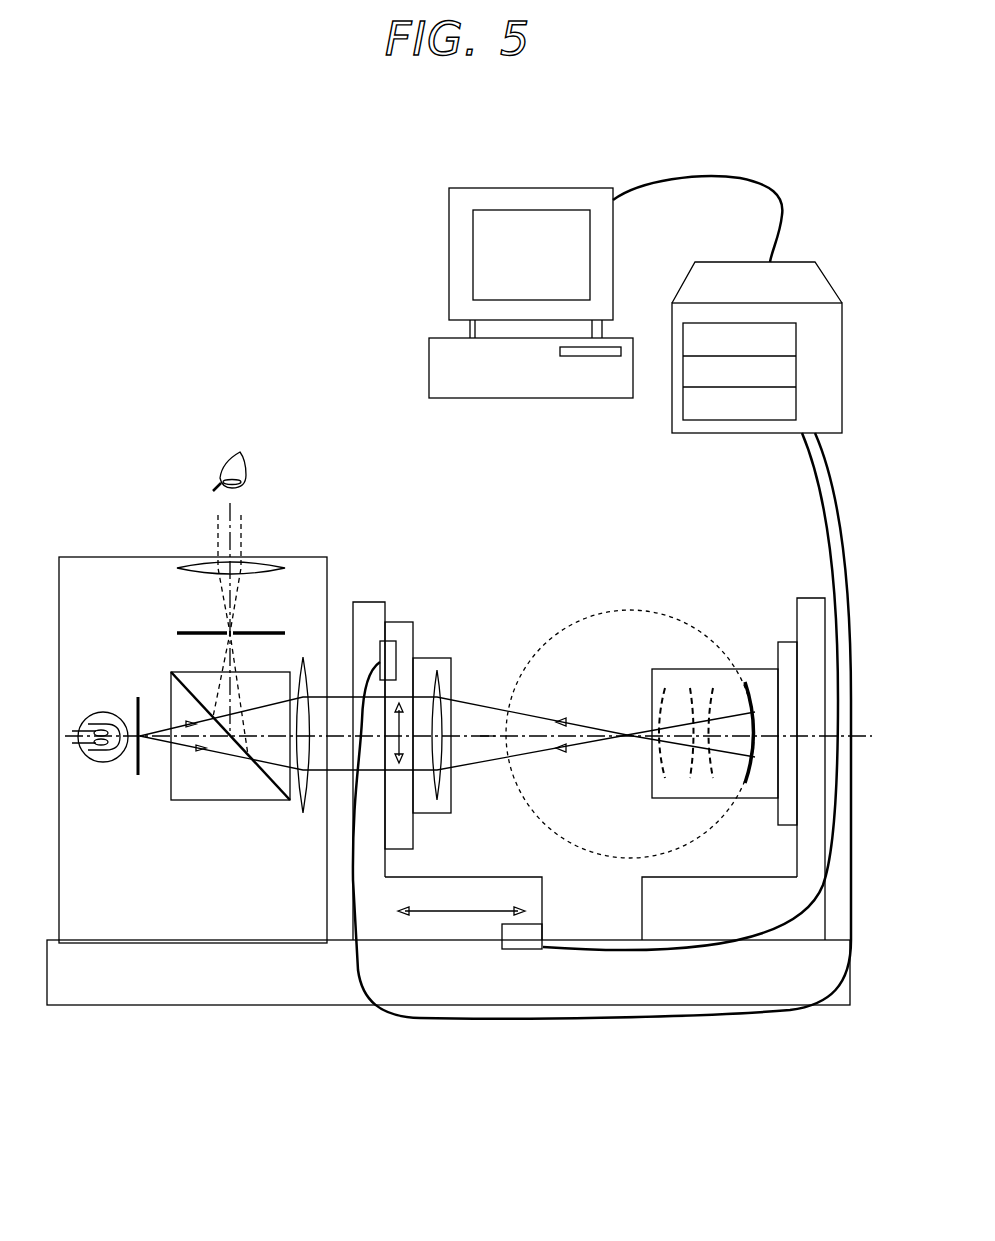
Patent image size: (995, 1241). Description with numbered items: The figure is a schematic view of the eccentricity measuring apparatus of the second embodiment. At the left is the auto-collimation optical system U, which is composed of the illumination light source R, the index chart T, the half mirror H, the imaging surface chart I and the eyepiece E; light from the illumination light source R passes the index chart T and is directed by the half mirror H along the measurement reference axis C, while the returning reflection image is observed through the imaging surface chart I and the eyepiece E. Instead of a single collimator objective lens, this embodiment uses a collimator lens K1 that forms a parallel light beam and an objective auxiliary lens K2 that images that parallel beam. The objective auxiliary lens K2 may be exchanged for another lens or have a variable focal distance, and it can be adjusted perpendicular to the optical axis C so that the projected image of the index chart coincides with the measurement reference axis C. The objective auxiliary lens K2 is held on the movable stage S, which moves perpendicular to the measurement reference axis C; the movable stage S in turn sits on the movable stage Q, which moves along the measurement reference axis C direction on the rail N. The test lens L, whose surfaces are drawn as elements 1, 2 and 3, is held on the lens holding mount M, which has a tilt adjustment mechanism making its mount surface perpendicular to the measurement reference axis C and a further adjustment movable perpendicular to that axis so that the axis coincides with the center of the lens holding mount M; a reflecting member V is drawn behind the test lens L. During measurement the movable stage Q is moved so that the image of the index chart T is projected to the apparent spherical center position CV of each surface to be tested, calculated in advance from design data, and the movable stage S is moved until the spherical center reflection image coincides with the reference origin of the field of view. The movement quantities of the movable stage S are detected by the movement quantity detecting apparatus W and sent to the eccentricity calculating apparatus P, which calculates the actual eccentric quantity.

The eccentricity calculating apparatus P is at (563, 188).
The movement quantity detecting apparatus W is at (800, 262).
The auto-collimation optical system U is at (300, 557).
The eyepiece E is at (177, 570).
The imaging surface chart I is at (177, 633).
The collimator lens K1 is at (303, 657).
The movable stage S is at (398, 622).
The objective auxiliary lens K2 is at (437, 665).
The test lens L is at (683, 669).
The concave mirror V is at (748, 690).
The lens holding mount M is at (786, 642).
The apparent spherical center position CV is at (627, 735).
The measurement reference axis C is at (487, 745).
The illumination light source R is at (103, 762).
The index chart T is at (138, 780).
The half mirror H is at (262, 773).
The movable stage Q is at (466, 877).
The first lens element 1 is at (660, 776).
The second lens element 2 is at (688, 772).
The third lens element 3 is at (708, 772).
The rail N is at (493, 1017).